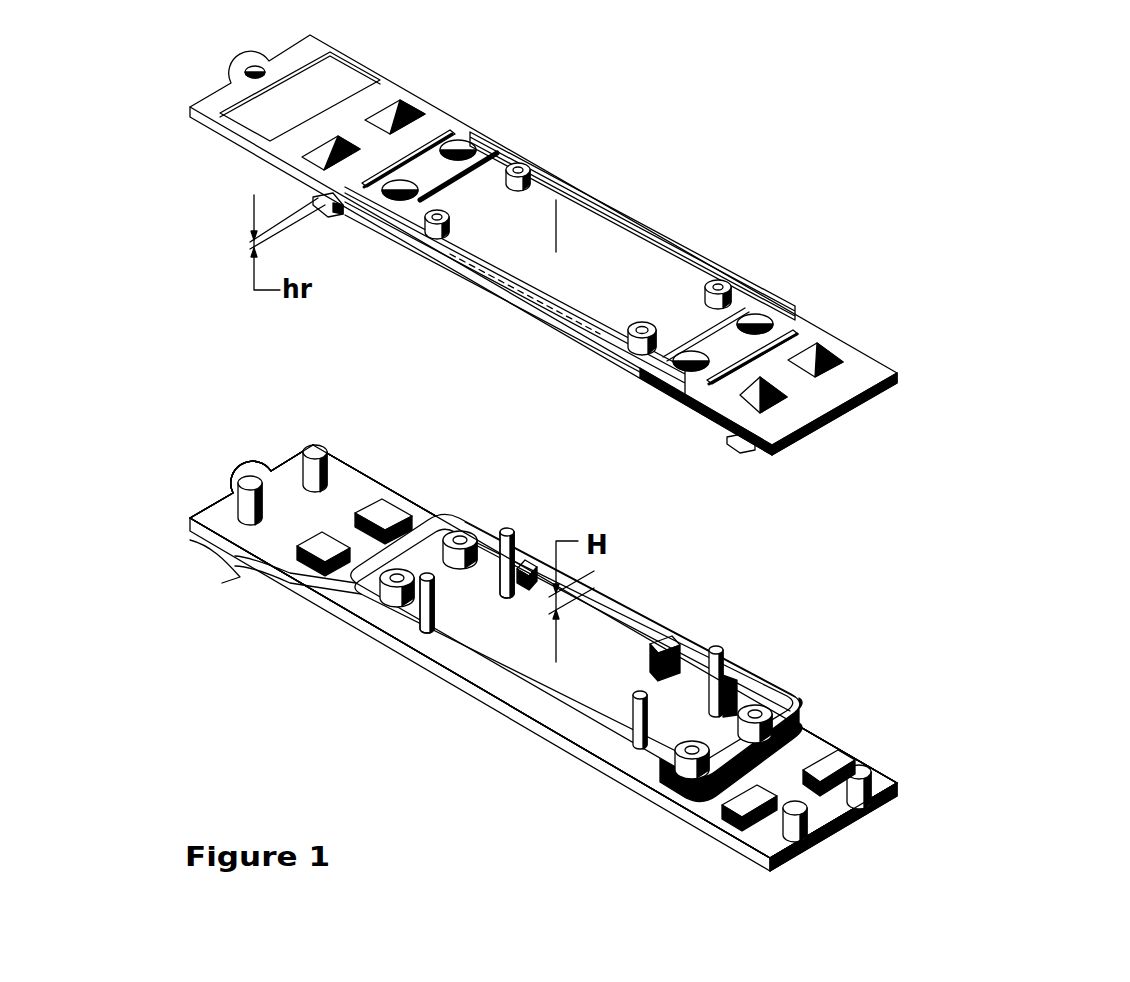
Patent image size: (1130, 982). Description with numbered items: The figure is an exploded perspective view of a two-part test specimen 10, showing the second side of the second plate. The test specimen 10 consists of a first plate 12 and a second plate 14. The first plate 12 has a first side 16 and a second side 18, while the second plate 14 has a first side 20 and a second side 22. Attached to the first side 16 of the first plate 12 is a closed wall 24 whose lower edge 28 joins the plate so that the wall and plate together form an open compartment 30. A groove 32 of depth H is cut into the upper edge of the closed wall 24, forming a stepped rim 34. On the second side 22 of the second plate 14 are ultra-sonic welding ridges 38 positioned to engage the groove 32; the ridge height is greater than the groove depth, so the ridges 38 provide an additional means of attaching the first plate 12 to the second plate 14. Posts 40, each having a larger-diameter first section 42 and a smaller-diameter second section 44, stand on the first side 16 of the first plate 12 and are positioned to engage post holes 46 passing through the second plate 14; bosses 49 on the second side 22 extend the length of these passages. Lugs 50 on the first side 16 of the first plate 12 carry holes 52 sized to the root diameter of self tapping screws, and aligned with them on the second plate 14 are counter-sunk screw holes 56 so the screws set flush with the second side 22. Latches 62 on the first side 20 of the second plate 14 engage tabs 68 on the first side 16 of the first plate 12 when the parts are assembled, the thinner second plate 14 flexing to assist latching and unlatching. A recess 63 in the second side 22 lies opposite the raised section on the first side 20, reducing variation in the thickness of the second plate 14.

The test specimen 10 is at (905, 160).
The first plate 12 is at (827, 860).
The second plate 14 is at (895, 388).
The first side of the first plate 16 is at (883, 783).
The second side of the first plate 18 is at (240, 578).
The first side of the second plate 20 is at (222, 130).
The second side of the second plate 22 is at (840, 347).
The closed wall 24 is at (455, 672).
The lower edge 28 is at (617, 635).
The open compartment 30 is at (490, 710).
The groove 32 is at (613, 605).
The stepped rim 34 is at (400, 500).
The ultra-sonic welding ridges 38 is at (400, 175).
The posts 40 is at (507, 530).
The first section 42 is at (430, 572).
The second section 44 is at (440, 512).
The post holes 46 is at (518, 163).
The bosses 49 is at (558, 178).
The lugs 50 is at (395, 570).
The holes 52 is at (472, 592).
The screw holes 56 is at (413, 190).
The latches 62 is at (313, 203).
The recess 63 is at (557, 258).
The tabs 68 is at (318, 455).